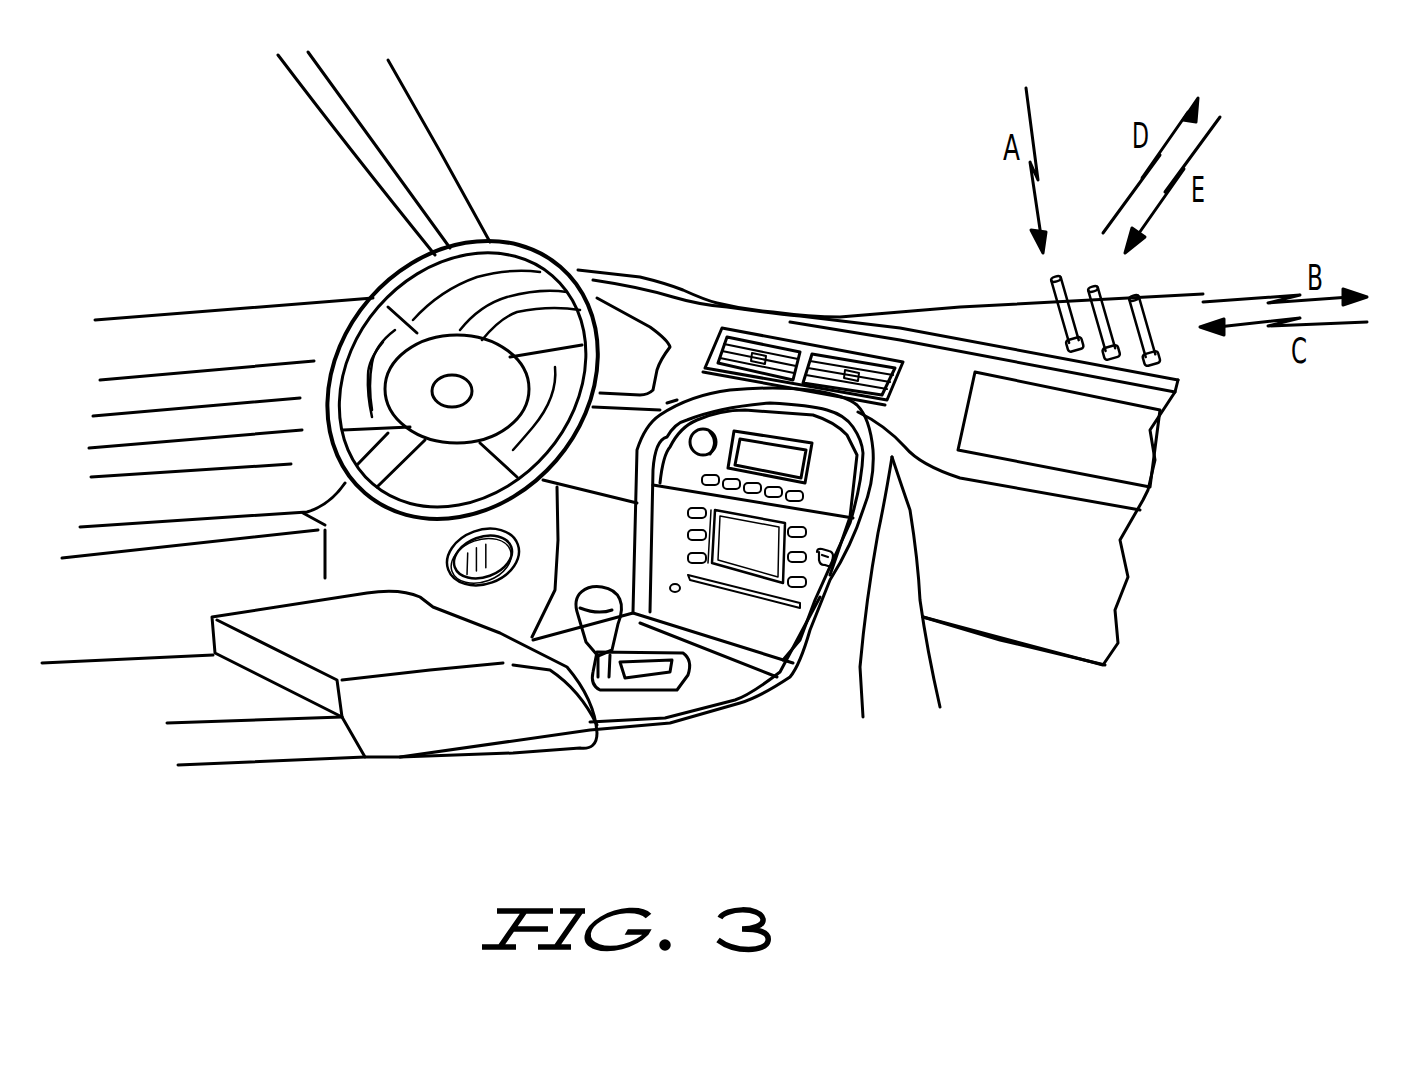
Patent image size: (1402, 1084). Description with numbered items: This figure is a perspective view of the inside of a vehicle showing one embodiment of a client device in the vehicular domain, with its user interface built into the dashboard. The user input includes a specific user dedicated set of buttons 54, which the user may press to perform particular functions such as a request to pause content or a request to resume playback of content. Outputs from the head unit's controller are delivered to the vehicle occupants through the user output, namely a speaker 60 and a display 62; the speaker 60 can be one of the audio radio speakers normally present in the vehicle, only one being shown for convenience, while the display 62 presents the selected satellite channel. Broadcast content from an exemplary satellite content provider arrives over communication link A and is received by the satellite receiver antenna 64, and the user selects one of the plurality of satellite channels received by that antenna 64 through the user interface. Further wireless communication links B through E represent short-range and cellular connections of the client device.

The user dedicated set of buttons 54 is at (818, 568).
The speaker 60 is at (450, 572).
The display 62 is at (720, 555).
The satellite receiver antenna 64 is at (1057, 313).